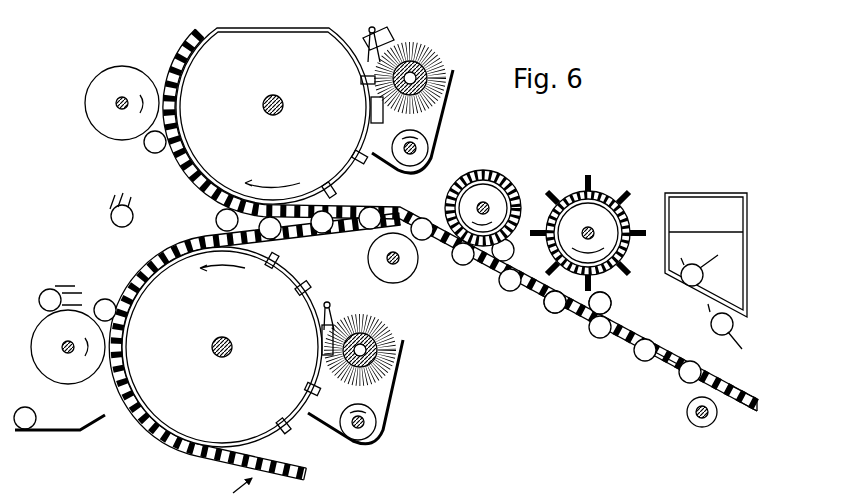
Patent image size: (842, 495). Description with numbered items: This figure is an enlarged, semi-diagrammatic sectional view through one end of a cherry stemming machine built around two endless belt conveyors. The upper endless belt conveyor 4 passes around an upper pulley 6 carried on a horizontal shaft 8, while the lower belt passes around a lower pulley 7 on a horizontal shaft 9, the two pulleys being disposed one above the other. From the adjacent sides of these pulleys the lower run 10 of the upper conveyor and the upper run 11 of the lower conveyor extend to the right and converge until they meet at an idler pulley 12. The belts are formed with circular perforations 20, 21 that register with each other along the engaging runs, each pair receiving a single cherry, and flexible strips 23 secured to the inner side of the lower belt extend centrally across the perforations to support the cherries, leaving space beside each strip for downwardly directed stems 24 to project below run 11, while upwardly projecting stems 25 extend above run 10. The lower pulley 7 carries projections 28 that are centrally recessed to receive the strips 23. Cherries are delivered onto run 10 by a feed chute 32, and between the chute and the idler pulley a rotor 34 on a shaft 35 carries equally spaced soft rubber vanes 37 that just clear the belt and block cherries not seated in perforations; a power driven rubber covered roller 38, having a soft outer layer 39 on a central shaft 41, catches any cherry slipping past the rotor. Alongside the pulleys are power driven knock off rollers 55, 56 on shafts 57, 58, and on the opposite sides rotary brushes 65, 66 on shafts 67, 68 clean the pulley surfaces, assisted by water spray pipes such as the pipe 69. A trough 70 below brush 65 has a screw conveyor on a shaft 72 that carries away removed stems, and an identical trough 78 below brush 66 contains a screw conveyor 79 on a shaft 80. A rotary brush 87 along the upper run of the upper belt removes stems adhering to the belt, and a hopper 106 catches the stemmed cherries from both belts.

The upper endless belt conveyor 4 is at (155, 47).
The upper pulley 6 is at (276, 61).
The lower pulley 7 is at (221, 306).
The horizontal shaft 8 is at (284, 104).
The horizontal shaft 9 is at (233, 347).
The lower run 10 is at (660, 355).
The upper run 11 is at (662, 365).
The idler pulley 12 is at (400, 272).
The circular perforations 20 is at (735, 398).
The circular perforations 21 is at (727, 412).
The strips 23 is at (725, 404).
The stems 24 is at (548, 328).
The upwardly projecting stems 25 is at (606, 318).
The projections 28 is at (312, 283).
The feed chute 32 is at (735, 272).
The rotor 34 is at (612, 183).
The rotor shaft 35 is at (594, 231).
The vanes 37 is at (625, 192).
The roller 38 is at (503, 180).
The outer rubber layer 39 is at (478, 196).
The roller shaft 41 is at (470, 182).
The knock off roller 55 is at (100, 107).
The knock off roller 56 is at (48, 328).
The roller shaft 57 is at (122, 110).
The roller shaft 58 is at (68, 354).
The rotary brush 65 is at (412, 50).
The rotary brush 66 is at (402, 370).
The brush shaft 67 is at (420, 70).
The brush shaft / water spray pipe 68 is at (374, 28).
The water spray pipe 69 is at (331, 305).
The trough 70 is at (446, 104).
The screw conveyor shaft 72 is at (420, 147).
The trough 78 is at (390, 410).
The screw conveyor 79 is at (371, 431).
The screw conveyor shaft 80 is at (358, 430).
The rotary brush 87 is at (375, 486).
The hopper 106 is at (60, 440).